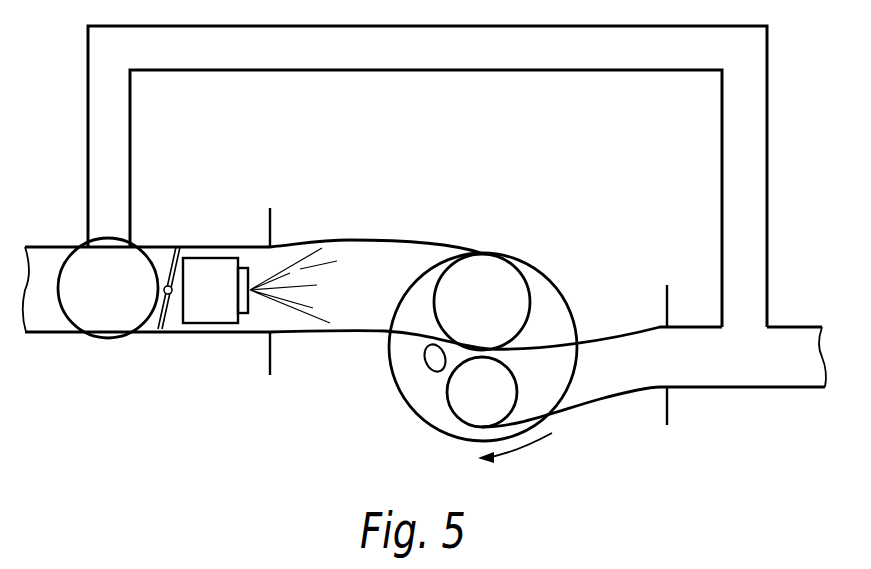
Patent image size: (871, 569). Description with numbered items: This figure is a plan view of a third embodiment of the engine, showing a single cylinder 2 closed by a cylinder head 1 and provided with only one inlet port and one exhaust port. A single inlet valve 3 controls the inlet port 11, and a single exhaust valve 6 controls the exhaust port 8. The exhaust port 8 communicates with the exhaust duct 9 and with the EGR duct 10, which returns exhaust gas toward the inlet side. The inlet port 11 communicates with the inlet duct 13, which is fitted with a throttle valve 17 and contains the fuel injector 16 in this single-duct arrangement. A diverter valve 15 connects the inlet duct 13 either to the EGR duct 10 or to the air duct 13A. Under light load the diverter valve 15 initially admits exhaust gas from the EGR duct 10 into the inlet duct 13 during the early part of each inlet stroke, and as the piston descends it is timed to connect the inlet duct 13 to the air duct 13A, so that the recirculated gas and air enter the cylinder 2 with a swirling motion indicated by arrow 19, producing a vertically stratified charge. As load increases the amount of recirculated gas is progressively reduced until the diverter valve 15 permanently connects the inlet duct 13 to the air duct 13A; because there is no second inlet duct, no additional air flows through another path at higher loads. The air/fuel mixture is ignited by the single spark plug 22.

The cylinder head 1 is at (277, 357).
The cylinder 2 is at (430, 427).
The inlet valve 3 is at (488, 287).
The exhaust valve 6 is at (475, 400).
The exhaust port 8 is at (607, 370).
The exhaust duct 9 is at (753, 368).
The EGR duct 10 is at (752, 276).
The inlet port 11 is at (380, 272).
The inlet duct 13 is at (202, 247).
The air duct 13A is at (50, 313).
The diverter valve 15 is at (113, 297).
The fuel injector 16 is at (232, 258).
The throttle valve 17 is at (167, 315).
The arrow 19 is at (533, 445).
The spark plug 22 is at (428, 358).